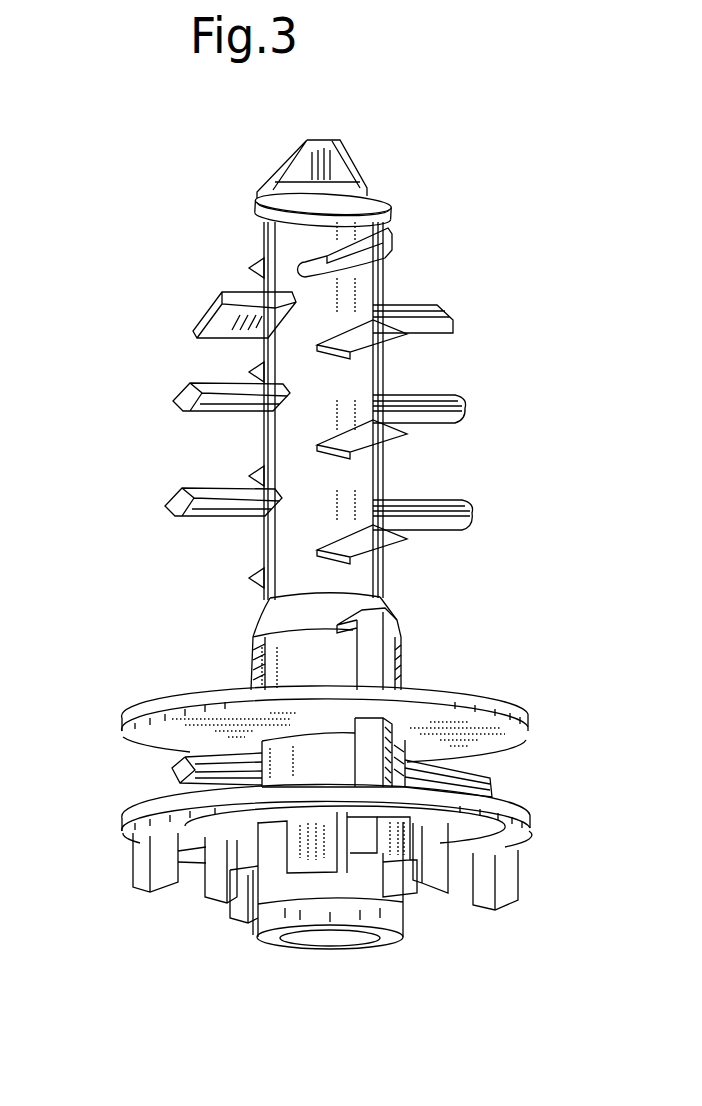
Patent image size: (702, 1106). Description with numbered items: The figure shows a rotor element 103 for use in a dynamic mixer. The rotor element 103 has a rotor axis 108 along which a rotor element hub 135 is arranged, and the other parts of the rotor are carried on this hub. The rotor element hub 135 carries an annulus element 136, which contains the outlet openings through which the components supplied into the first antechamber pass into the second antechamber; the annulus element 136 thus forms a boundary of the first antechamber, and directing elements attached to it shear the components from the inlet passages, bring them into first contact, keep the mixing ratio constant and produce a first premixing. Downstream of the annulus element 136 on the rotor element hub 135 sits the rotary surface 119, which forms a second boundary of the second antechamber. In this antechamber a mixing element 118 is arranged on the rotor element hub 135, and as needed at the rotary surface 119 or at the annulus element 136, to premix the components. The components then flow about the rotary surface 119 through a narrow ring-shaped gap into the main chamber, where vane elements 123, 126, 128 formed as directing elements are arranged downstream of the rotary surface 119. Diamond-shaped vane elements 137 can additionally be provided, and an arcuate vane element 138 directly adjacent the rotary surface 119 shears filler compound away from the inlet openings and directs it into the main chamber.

The rotor element 103 is at (417, 192).
The rotor axis 108 is at (325, 192).
The mixing element 118 is at (485, 779).
The rotary surface 119 is at (122, 722).
The vane element 123 is at (455, 318).
The vane element 126 is at (470, 417).
The vane element 128 is at (476, 520).
The rotor element hub 135 is at (385, 370).
The annulus element 136 is at (122, 820).
The vane element 137 is at (325, 553).
The arcuate vane element 138 is at (365, 637).